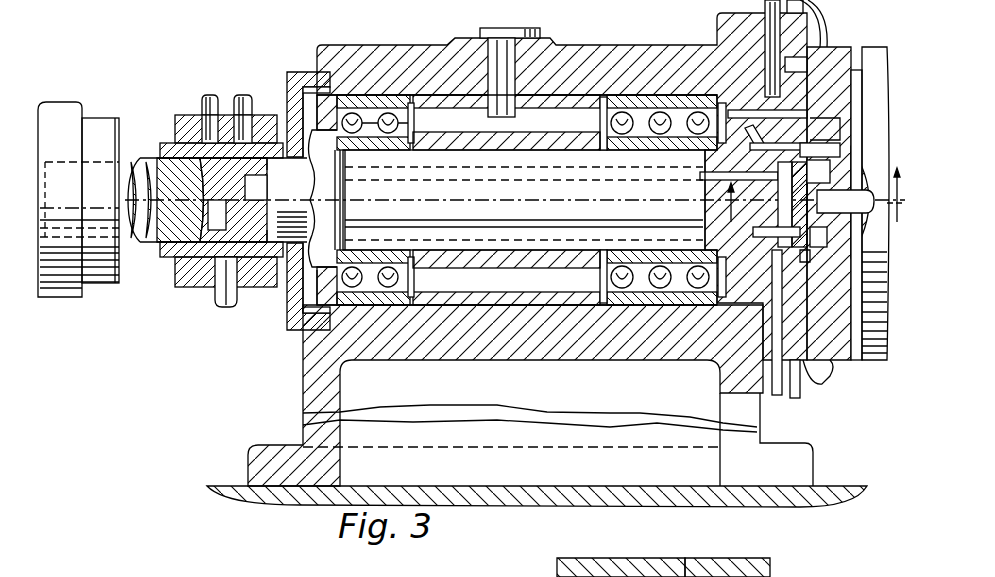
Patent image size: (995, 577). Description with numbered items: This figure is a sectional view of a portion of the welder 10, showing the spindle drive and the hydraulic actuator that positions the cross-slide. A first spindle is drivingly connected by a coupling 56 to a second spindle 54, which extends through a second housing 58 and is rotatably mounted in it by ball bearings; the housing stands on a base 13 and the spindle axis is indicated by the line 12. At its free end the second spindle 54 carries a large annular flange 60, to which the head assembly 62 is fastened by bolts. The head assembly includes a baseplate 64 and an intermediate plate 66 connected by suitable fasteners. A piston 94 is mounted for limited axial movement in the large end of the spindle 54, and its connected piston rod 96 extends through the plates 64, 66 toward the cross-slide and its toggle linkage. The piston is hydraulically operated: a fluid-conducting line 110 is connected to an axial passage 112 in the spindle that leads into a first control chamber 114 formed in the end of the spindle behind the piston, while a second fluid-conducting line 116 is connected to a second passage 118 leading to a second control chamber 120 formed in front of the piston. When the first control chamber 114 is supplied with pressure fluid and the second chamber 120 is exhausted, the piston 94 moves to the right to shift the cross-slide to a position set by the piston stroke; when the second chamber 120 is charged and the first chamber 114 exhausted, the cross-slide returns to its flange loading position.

The machine tool headstock 10 is at (667, 44).
The spindle shaft 12 is at (625, 200).
The base plate 13 is at (220, 492).
The second spindle 54 is at (148, 162).
The coupling 56 is at (77, 110).
The second housing 58 is at (398, 55).
The annular flange 60 is at (838, 50).
The head assembly 62 is at (855, 366).
The baseplate 64 is at (878, 55).
The intermediate plate 66 is at (737, 573).
The piston 94 is at (805, 240).
The piston rod 96 is at (880, 192).
The fluid-conducting line 110 is at (208, 107).
The axial passage 112 is at (232, 213).
The first control chamber 114 is at (818, 147).
The second fluid-conducting line 116 is at (240, 107).
The second passage 118 is at (260, 173).
The second control chamber 120 is at (843, 150).